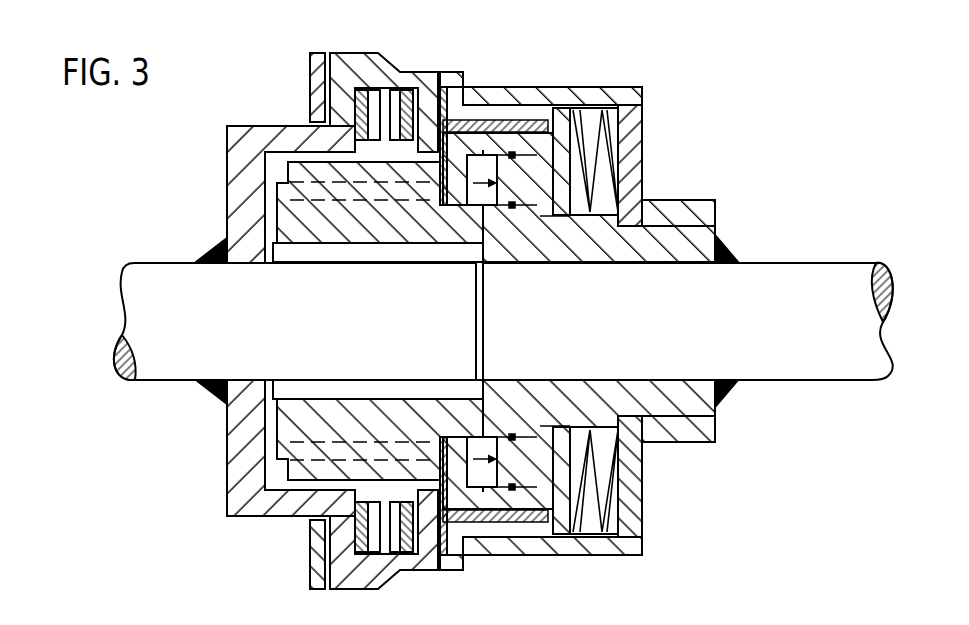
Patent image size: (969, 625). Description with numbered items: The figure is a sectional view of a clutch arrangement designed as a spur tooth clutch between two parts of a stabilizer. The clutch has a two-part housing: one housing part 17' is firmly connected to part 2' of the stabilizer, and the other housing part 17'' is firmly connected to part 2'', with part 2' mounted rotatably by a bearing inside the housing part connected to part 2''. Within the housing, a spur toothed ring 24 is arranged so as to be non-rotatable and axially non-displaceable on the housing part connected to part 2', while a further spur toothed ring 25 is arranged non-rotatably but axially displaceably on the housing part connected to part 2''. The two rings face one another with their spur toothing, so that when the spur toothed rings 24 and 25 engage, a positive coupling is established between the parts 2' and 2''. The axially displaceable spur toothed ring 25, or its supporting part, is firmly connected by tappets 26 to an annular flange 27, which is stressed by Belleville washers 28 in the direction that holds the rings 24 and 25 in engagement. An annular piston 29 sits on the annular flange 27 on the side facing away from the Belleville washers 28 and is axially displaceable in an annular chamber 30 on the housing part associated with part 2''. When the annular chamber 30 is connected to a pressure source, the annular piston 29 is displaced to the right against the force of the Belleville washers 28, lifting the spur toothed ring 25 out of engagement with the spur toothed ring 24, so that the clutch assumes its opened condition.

The part of the stabilizer 2' is at (268, 321).
The part of the stabilizer 2'' is at (723, 321).
The housing part 17' is at (298, 187).
The housing part 17'' is at (589, 167).
The spur toothed ring 24 is at (363, 98).
The spur toothed ring 25 is at (406, 98).
The tappets 26 is at (481, 104).
The annular flange 27 is at (553, 120).
The Belleville washers 28 is at (603, 106).
The annular piston 29 is at (541, 170).
The annular chamber 30 is at (487, 195).